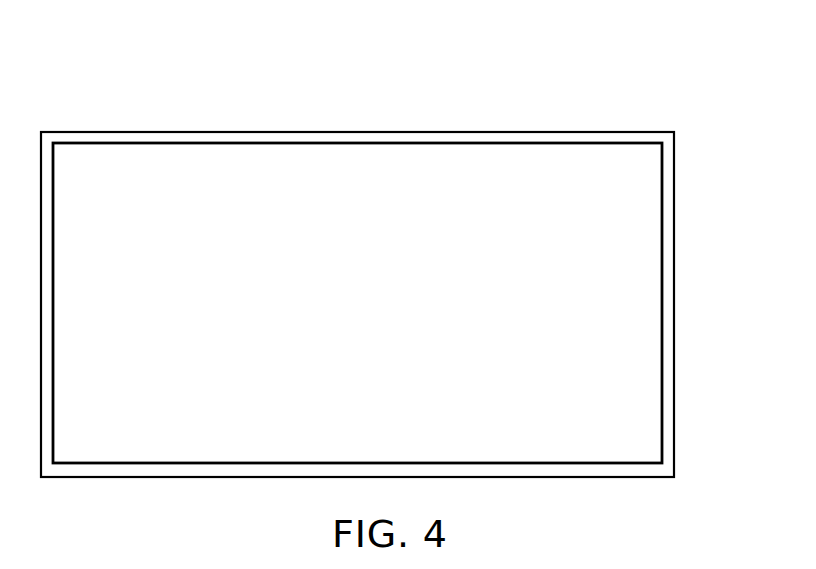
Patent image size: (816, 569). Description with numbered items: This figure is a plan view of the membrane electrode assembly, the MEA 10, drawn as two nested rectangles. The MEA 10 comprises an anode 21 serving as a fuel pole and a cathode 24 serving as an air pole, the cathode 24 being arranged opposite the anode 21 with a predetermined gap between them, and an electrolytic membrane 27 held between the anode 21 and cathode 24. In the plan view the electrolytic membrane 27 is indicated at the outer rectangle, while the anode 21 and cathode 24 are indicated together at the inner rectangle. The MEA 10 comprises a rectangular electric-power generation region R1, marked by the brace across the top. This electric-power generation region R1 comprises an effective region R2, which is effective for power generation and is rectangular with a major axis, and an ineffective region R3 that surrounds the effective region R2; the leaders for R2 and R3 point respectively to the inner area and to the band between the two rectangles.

The MEA 10 is at (403, 256).
The electrolytic membrane 27 is at (674, 221).
The anode 21 is at (402, 303).
The cathode 24 is at (663, 372).
The electric-power generation region R1 is at (457, 81).
The effective region R2 is at (311, 148).
The ineffective region R3 is at (422, 134).